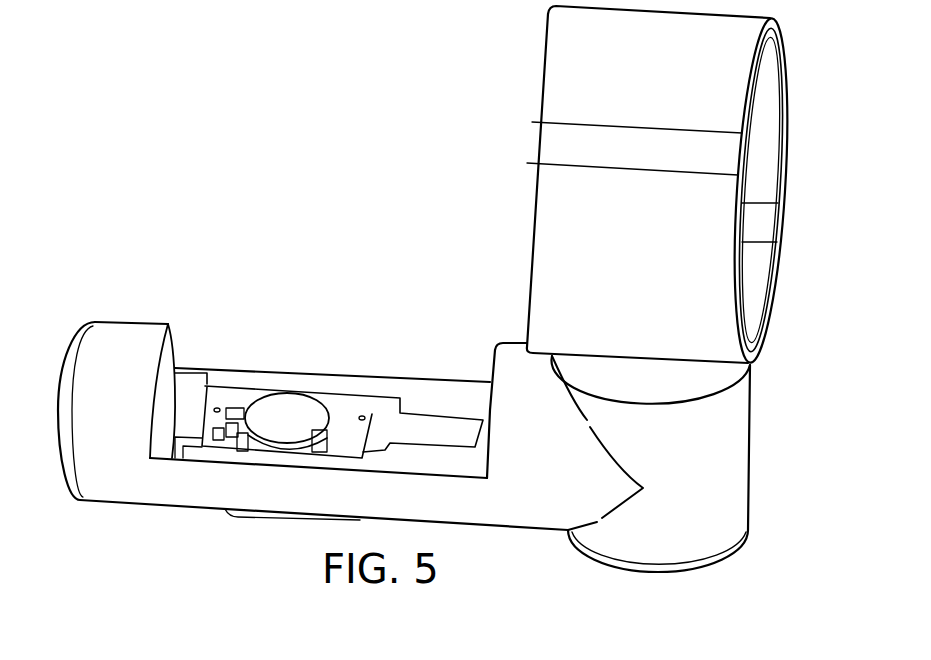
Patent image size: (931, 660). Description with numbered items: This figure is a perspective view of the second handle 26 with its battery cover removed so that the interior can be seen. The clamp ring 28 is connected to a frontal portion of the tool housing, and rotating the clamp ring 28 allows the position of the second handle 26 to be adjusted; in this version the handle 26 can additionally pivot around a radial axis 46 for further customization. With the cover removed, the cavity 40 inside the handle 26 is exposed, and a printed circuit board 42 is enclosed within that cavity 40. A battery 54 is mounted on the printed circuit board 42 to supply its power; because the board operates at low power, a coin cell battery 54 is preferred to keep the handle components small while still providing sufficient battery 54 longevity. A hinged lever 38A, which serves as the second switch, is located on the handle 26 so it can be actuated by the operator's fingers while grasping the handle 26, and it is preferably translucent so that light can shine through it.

The second handle 26 is at (118, 322).
The clamp ring 28 is at (533, 58).
The hinged lever 38A is at (227, 518).
The cavity 40 is at (192, 383).
The printed circuit board 42 is at (357, 415).
The radial axis 46 is at (748, 478).
The battery 54 is at (290, 402).